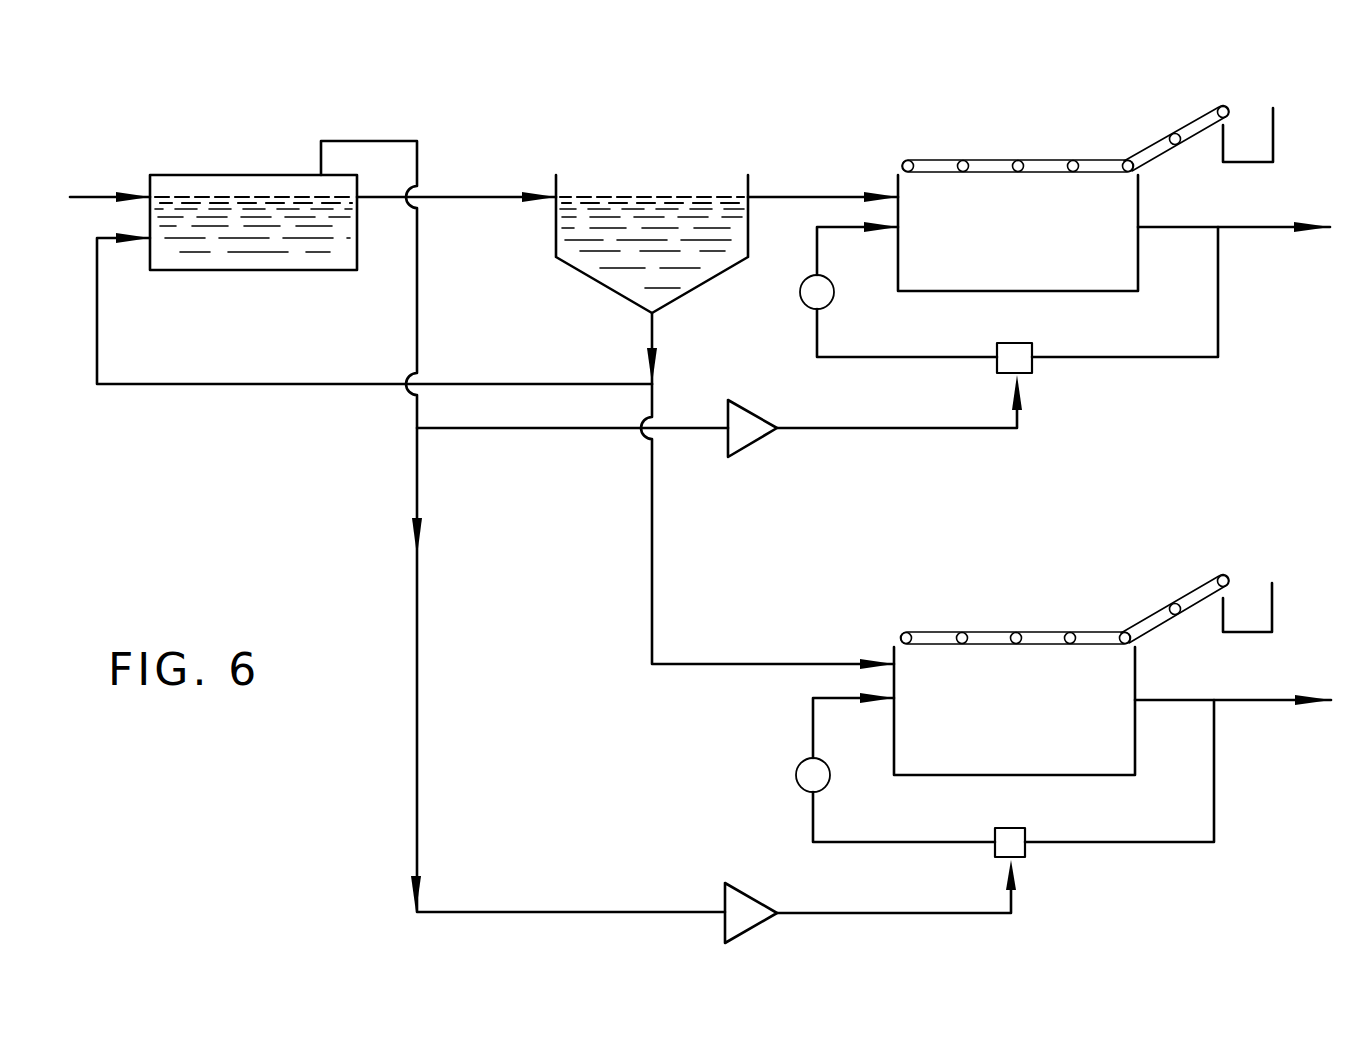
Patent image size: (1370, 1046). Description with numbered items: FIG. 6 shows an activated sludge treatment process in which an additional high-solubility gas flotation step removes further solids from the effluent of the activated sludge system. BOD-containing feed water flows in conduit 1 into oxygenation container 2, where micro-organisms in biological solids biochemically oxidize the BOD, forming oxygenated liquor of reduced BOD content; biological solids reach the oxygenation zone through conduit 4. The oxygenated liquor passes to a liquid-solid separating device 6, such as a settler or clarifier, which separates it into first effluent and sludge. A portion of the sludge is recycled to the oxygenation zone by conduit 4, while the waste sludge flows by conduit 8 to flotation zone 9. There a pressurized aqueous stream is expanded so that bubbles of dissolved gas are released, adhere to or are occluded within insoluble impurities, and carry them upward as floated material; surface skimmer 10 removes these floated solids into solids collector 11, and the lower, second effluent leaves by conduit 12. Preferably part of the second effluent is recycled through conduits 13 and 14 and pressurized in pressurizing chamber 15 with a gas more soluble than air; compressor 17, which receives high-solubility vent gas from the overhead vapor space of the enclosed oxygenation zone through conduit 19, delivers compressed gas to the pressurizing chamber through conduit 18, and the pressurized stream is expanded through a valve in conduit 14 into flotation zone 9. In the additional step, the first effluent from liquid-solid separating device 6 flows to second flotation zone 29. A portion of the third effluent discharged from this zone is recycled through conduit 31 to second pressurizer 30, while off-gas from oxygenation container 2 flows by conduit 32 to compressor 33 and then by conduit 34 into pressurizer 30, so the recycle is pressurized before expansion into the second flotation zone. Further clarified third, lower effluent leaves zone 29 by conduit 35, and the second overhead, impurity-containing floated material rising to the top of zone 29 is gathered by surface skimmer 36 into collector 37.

The conduit 1 is at (106, 182).
The oxygenation container 2 is at (220, 158).
The conduit 4 is at (250, 384).
The liquid-solid separating device 6 is at (748, 238).
The conduit 8 is at (657, 578).
The flotation zone 9 is at (1135, 762).
The surface skimmer 10 is at (1006, 630).
The solids collector 11 is at (1275, 606).
The conduit 12 is at (1152, 700).
The conduit 13 is at (1214, 790).
The conduit 14 is at (920, 816).
The pressurizing chamber 15 is at (1005, 828).
The compressor 17 is at (770, 880).
The conduit 18 is at (910, 892).
The conduit 19 is at (505, 912).
The second flotation zone 29 is at (898, 207).
The second pressurizer 30 is at (1005, 343).
The conduit 31 is at (1218, 292).
The conduit 32 is at (706, 406).
The compressor 33 is at (748, 409).
The conduit 34 is at (890, 406).
The conduit 35 is at (1262, 206).
The surface skimmer 36 is at (1048, 160).
The collector 37 is at (1275, 133).